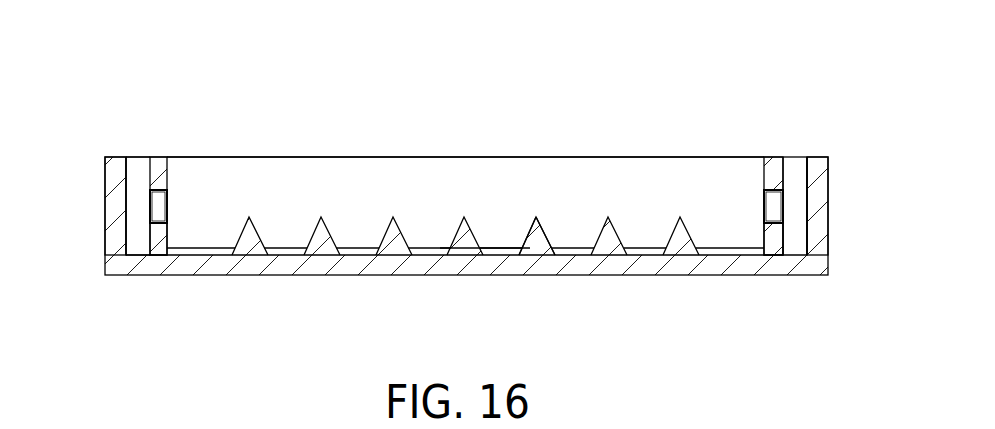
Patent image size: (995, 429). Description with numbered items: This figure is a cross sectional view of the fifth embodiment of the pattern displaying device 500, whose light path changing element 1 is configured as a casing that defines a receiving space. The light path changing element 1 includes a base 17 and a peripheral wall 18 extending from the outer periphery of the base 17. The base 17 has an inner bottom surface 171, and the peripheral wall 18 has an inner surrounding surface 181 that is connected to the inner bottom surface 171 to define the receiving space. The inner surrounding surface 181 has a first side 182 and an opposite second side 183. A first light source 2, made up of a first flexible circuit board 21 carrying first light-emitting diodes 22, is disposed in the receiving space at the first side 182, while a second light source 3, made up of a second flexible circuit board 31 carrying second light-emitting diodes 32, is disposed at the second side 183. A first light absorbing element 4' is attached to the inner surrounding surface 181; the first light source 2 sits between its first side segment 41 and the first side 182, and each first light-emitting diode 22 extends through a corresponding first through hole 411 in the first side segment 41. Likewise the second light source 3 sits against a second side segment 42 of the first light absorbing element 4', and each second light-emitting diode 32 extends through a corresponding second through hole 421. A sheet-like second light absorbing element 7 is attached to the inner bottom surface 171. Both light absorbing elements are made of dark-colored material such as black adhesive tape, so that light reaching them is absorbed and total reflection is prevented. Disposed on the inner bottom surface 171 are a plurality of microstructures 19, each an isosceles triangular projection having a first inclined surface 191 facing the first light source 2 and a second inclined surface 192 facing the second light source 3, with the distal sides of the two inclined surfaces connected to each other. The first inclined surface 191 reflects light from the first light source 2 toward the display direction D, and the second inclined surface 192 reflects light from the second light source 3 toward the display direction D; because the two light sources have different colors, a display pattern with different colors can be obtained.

The pattern displaying device 500 is at (98, 48).
The light path changing element 1 is at (427, 277).
The base 17 is at (578, 265).
The inner bottom surface 171 is at (498, 252).
The second light absorbing element 7 is at (195, 252).
The microstructure 19 is at (537, 207).
The first inclined surface 191 is at (557, 218).
The second inclined surface 192 is at (518, 217).
The peripheral wall 18 is at (115, 213).
The inner surrounding surface 181 is at (124, 229).
The second side 183 is at (127, 187).
The first side 182 is at (808, 198).
The second light source 3 is at (134, 153).
The second flexible circuit board 31 is at (135, 245).
The second light-emitting diode 32 is at (163, 207).
The second side segment 42 is at (156, 157).
The second through hole 421 is at (158, 232).
The first light source 2 is at (795, 150).
The first flexible circuit board 21 is at (793, 212).
The first light-emitting diode 22 is at (773, 198).
The first side segment 41 is at (770, 165).
The first through hole 411 is at (773, 233).
The first light absorbing element 4' is at (465, 133).
The display direction D is at (466, 143).